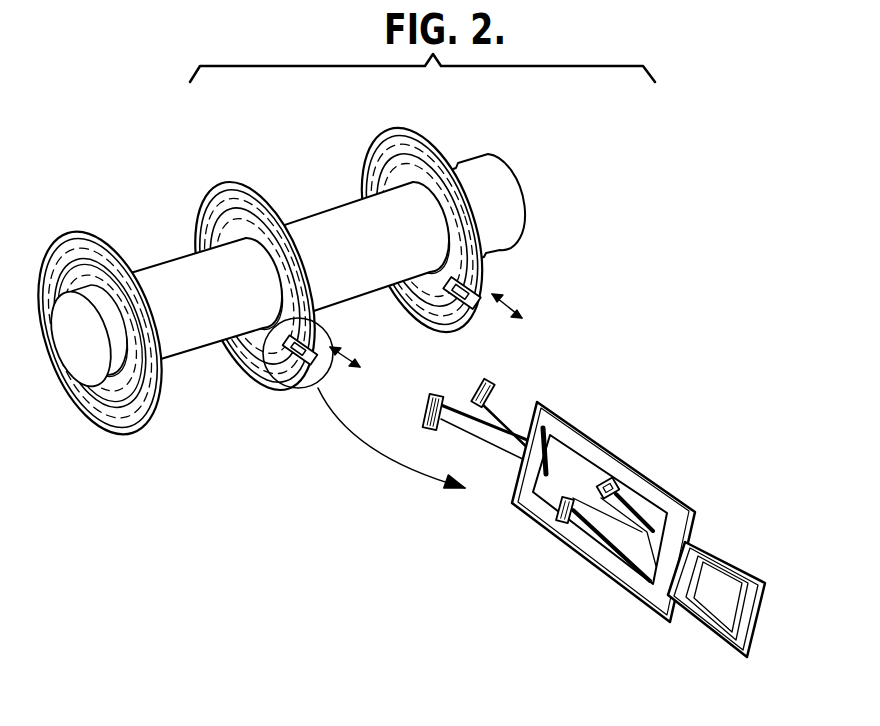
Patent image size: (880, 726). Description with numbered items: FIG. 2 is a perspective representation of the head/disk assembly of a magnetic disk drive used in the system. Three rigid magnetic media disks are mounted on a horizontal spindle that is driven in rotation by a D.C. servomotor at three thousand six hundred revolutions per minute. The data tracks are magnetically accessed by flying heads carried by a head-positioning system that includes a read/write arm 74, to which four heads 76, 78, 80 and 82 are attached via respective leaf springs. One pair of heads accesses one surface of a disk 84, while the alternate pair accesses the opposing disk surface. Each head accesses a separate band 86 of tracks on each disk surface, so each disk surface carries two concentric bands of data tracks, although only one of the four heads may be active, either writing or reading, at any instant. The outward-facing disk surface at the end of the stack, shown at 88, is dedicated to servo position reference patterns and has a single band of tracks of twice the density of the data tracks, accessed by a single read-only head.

The read/write arm 74 is at (596, 585).
The head 76 is at (428, 401).
The head 78 is at (483, 380).
The head 80 is at (559, 522).
The head 82 is at (607, 480).
The disk 84 is at (255, 187).
The band of tracks 86 is at (206, 219).
The outward-facing disk surface 88 is at (98, 430).